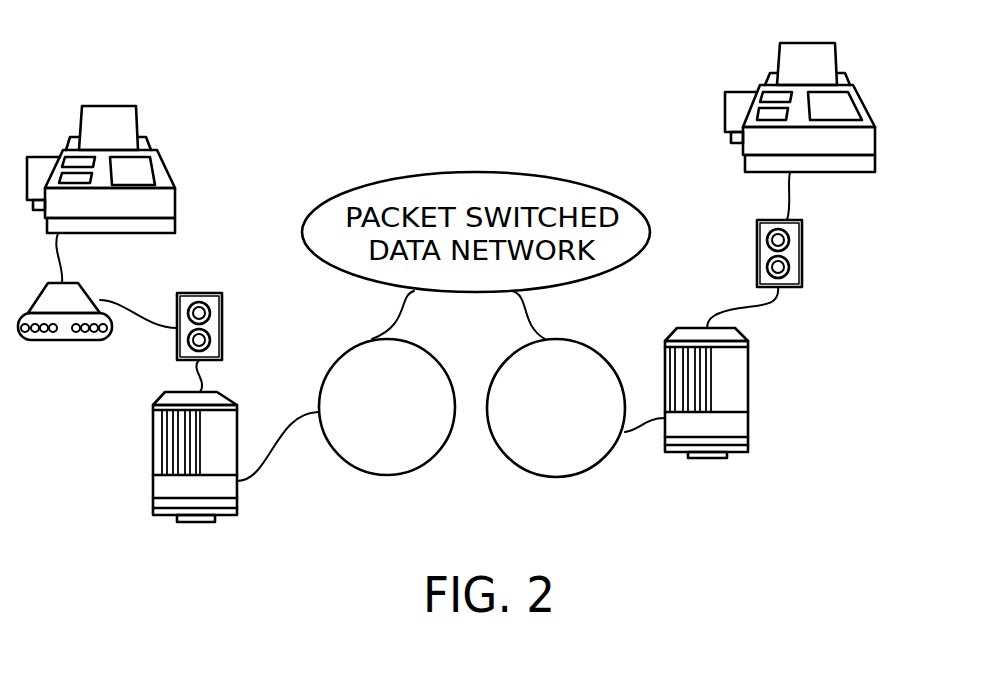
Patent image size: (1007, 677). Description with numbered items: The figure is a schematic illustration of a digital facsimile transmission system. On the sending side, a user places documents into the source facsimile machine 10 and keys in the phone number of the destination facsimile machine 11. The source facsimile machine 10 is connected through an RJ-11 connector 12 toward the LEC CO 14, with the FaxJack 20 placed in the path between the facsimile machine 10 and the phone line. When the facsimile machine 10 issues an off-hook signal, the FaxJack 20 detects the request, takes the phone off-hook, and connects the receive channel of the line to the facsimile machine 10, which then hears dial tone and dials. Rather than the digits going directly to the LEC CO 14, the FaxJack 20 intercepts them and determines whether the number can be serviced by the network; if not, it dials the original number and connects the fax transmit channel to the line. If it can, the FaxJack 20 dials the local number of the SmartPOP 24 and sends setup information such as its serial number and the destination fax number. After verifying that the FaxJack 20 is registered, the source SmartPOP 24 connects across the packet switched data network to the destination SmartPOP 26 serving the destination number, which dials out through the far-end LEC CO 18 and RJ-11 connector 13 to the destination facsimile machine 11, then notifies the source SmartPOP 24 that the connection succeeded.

The source facsimile machine 10 is at (136, 121).
The destination facsimile machine 11 is at (836, 56).
The RJ-11 connector 12 is at (222, 312).
The RJ-11 jack 13 is at (802, 243).
The LEC CO 14 is at (228, 398).
The LEC central office 18 is at (743, 337).
The FaxJack 20 is at (98, 298).
The source SmartPOP 24 is at (366, 473).
The destination SmartPOP 26 is at (588, 470).